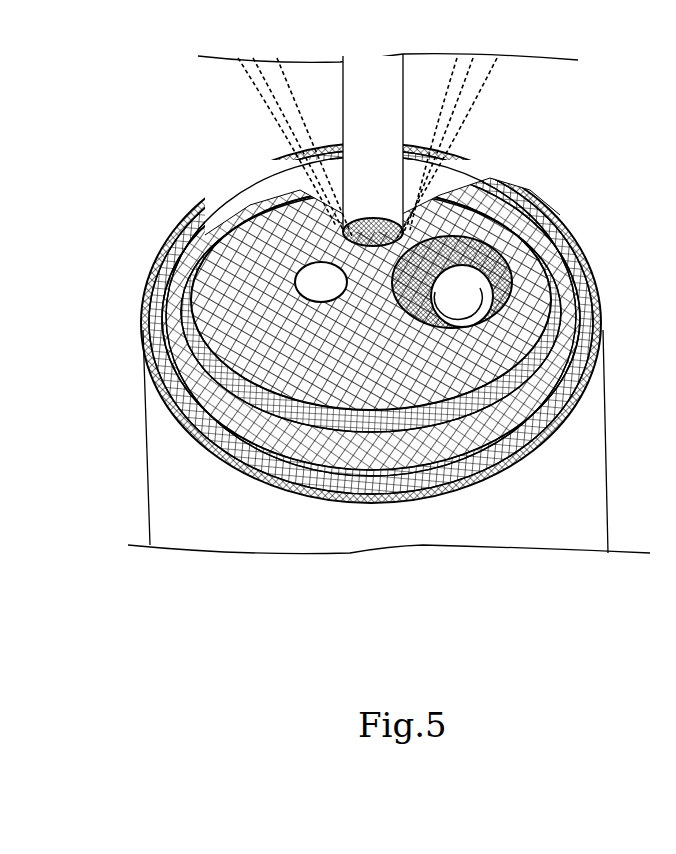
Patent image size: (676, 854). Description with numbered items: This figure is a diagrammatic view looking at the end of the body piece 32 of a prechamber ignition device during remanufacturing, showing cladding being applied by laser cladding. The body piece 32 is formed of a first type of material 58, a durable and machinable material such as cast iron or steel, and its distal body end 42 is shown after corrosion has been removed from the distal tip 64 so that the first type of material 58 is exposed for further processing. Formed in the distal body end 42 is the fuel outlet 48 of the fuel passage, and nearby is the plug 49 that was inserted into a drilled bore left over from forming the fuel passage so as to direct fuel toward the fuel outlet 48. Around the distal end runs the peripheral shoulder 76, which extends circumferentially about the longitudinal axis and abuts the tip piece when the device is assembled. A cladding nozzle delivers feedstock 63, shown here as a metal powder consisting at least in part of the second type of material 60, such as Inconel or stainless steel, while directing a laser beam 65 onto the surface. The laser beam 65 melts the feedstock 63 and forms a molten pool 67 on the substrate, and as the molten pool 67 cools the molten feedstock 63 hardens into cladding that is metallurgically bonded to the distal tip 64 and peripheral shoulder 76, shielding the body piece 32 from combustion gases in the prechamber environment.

The body piece 32 is at (607, 500).
The distal body end 42 is at (590, 405).
The fuel outlet 48 is at (323, 277).
The plug 49 is at (522, 205).
The first type of material 58 is at (275, 203).
The second type of material 60 is at (205, 250).
The feedstock 63 is at (262, 120).
The distal tip 64 is at (570, 248).
The laser beam 65 is at (343, 92).
The molten pool 67 is at (366, 213).
The peripheral shoulder 76 is at (162, 326).